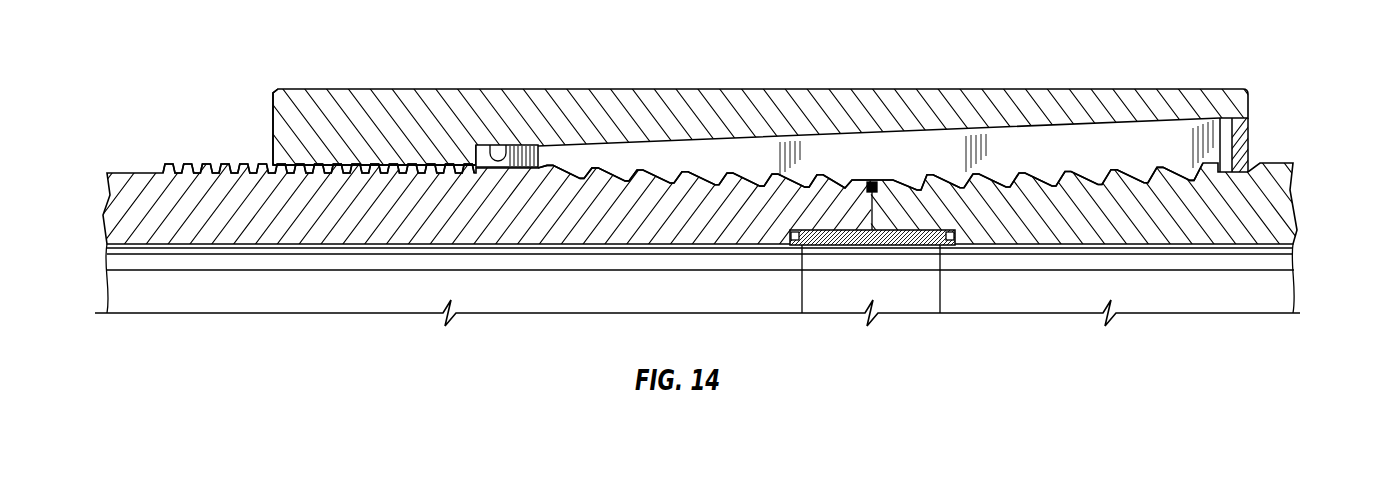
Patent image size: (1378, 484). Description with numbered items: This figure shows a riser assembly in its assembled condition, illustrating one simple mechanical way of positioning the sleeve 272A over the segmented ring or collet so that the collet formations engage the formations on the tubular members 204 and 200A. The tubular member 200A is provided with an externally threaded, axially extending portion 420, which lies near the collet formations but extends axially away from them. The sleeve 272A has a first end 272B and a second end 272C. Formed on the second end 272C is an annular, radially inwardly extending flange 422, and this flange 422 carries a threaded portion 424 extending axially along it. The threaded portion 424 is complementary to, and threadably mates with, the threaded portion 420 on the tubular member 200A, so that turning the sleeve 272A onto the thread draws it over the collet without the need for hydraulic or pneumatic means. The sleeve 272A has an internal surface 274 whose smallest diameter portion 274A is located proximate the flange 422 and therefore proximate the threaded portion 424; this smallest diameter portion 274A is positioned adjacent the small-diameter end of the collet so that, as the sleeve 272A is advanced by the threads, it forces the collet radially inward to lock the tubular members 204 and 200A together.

The tubular member 204 is at (1256, 219).
The tubular member 200A is at (325, 247).
The externally threaded, axially extending portion 420 is at (177, 168).
The annular, radially inwardly extending flange 422 is at (436, 153).
The threaded portion 424 is at (408, 164).
The sleeve 272A is at (893, 91).
The first end 272B is at (1250, 105).
The second end 272C is at (273, 127).
The surface 274 is at (700, 139).
The smallest diameter portion 274A is at (504, 145).